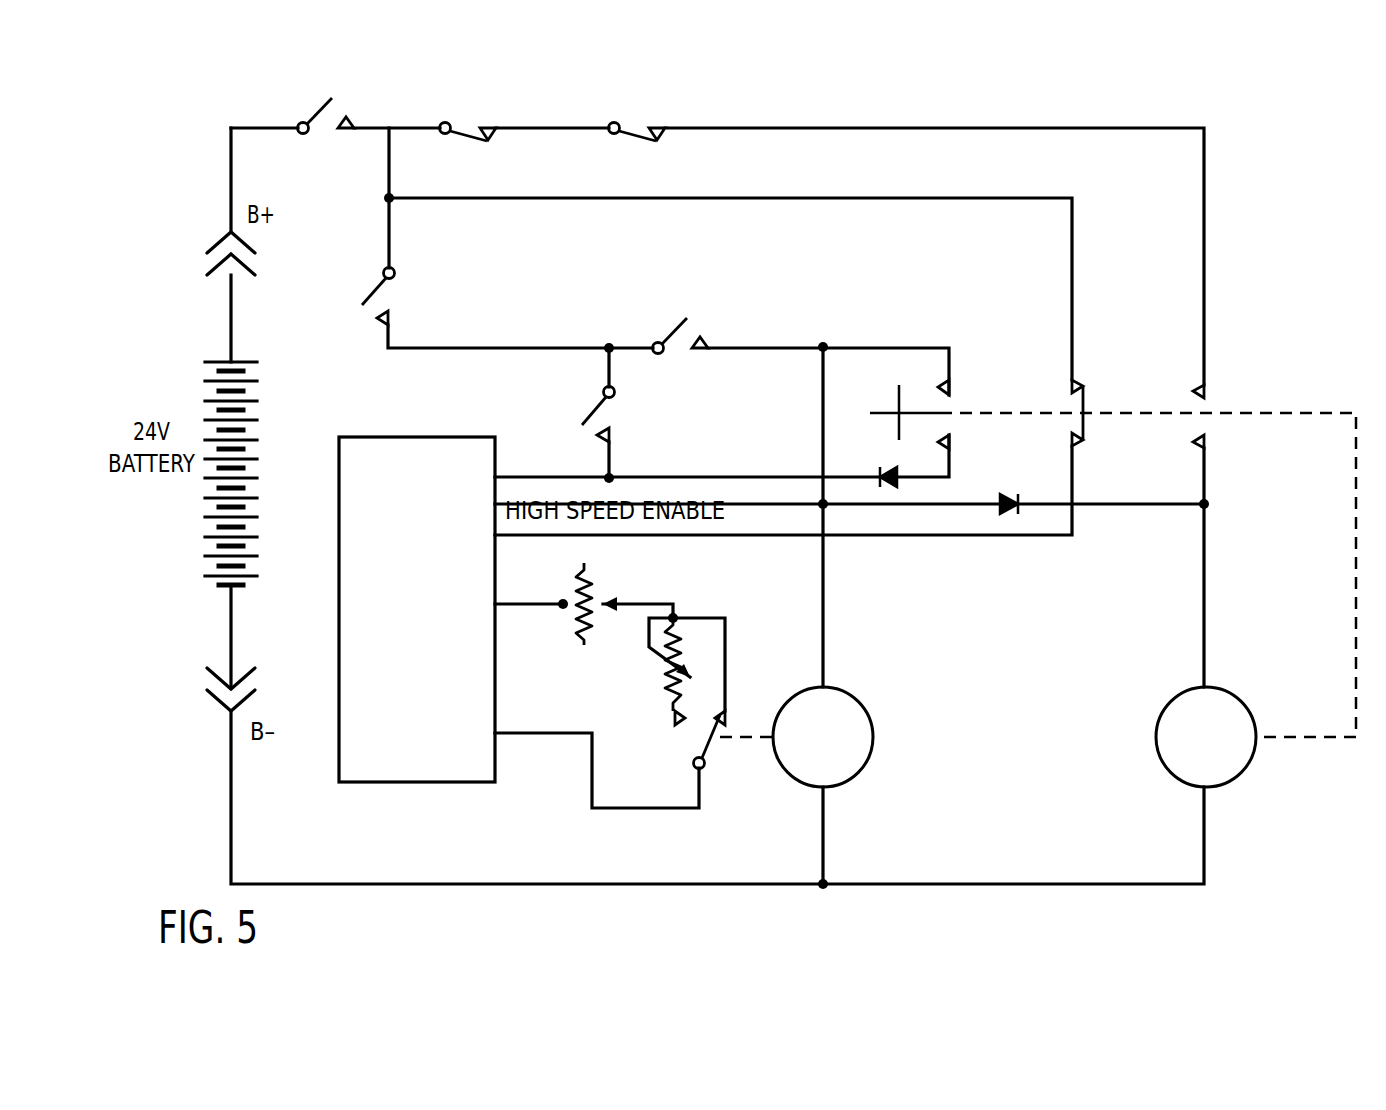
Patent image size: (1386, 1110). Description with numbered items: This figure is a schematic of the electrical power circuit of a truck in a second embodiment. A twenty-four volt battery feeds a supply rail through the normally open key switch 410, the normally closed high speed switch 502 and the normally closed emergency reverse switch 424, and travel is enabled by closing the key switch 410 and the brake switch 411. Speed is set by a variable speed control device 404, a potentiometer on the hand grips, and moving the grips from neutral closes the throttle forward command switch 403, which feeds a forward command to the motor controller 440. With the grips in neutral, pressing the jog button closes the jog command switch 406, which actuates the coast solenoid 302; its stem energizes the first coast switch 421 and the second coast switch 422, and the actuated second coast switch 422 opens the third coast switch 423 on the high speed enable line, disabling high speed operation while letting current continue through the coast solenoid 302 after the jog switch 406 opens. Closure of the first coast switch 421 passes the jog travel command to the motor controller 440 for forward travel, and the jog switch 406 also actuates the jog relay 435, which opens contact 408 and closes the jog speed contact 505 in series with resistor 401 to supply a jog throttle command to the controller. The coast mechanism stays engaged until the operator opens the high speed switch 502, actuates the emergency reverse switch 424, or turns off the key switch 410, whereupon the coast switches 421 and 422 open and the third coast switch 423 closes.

The key switch 410 is at (295, 113).
The high speed switch 502 is at (474, 113).
The emergency reverse switch 424 is at (686, 113).
The brake switch 411 is at (444, 292).
The jog command switch 406 is at (681, 317).
The throttle forward command switch 403 is at (523, 420).
The motor controller 440 is at (417, 609).
The variable speed control device 404 is at (575, 593).
The resistor 401 is at (594, 673).
The jog speed contact 505 is at (657, 728).
The contact 408 is at (733, 718).
The jog relay 435 is at (833, 750).
The first coast switch 421 is at (989, 372).
The third coast switch 423 is at (1118, 438).
The second coast switch 422 is at (1244, 369).
The coast solenoid 302 is at (1231, 737).